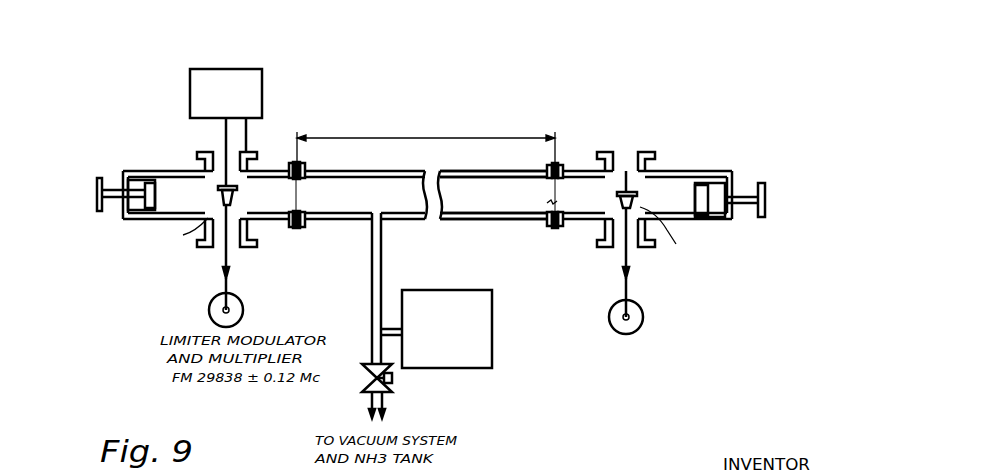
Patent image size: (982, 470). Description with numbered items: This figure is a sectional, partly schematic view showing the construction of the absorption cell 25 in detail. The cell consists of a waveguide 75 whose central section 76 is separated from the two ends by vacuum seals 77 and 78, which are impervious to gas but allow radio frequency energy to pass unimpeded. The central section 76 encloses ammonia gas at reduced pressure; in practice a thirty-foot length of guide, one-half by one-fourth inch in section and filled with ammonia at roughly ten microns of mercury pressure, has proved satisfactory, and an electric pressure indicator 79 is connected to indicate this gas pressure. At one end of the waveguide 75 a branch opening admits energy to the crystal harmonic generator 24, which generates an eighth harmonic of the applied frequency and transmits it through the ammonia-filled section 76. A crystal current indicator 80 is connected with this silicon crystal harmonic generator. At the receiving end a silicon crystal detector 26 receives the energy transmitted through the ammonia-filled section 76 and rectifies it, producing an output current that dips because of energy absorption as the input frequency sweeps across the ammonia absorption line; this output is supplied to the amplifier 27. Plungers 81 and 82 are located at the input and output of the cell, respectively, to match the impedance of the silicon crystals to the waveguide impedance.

The absorption cell 25 is at (460, 137).
The crystal current indicator 80 is at (235, 70).
The plunger 81 is at (158, 170).
The crystal harmonic generator 24 is at (217, 195).
The vacuum seal 77 is at (296, 185).
The waveguide 75 is at (463, 225).
The central section 76 is at (464, 173).
The vacuum seal 78 is at (560, 195).
The silicon crystal detector 26 is at (643, 190).
The plunger 82 is at (694, 203).
The amplifier 27 is at (643, 315).
The electric pressure indicator 79 is at (426, 289).